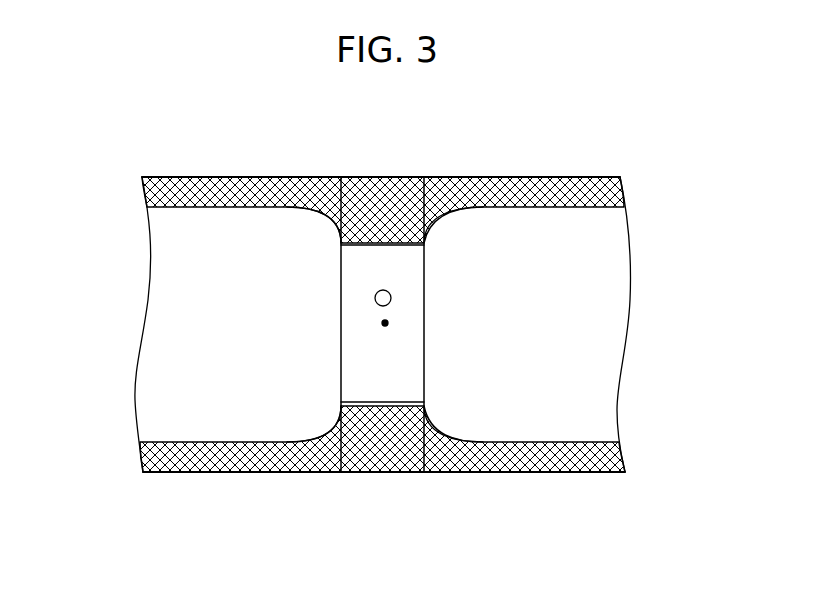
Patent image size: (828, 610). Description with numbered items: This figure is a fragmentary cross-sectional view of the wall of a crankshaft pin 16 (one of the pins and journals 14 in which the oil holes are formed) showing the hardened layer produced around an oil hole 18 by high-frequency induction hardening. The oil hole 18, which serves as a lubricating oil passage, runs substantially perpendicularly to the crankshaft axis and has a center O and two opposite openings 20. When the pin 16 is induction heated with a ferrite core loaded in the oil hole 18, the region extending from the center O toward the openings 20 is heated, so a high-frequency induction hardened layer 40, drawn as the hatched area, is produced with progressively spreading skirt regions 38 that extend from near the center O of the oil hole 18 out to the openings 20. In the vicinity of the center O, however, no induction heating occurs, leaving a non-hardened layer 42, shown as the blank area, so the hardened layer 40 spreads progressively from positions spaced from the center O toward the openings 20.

The journal 14 is at (399, 289).
The pin 16 is at (557, 174).
The oil hole 18 is at (432, 300).
The opening 20 is at (350, 177).
The skirt region 38 is at (323, 220).
The high-frequency induction hardened layer 40 is at (385, 177).
The non-hardened layer 42 is at (215, 310).